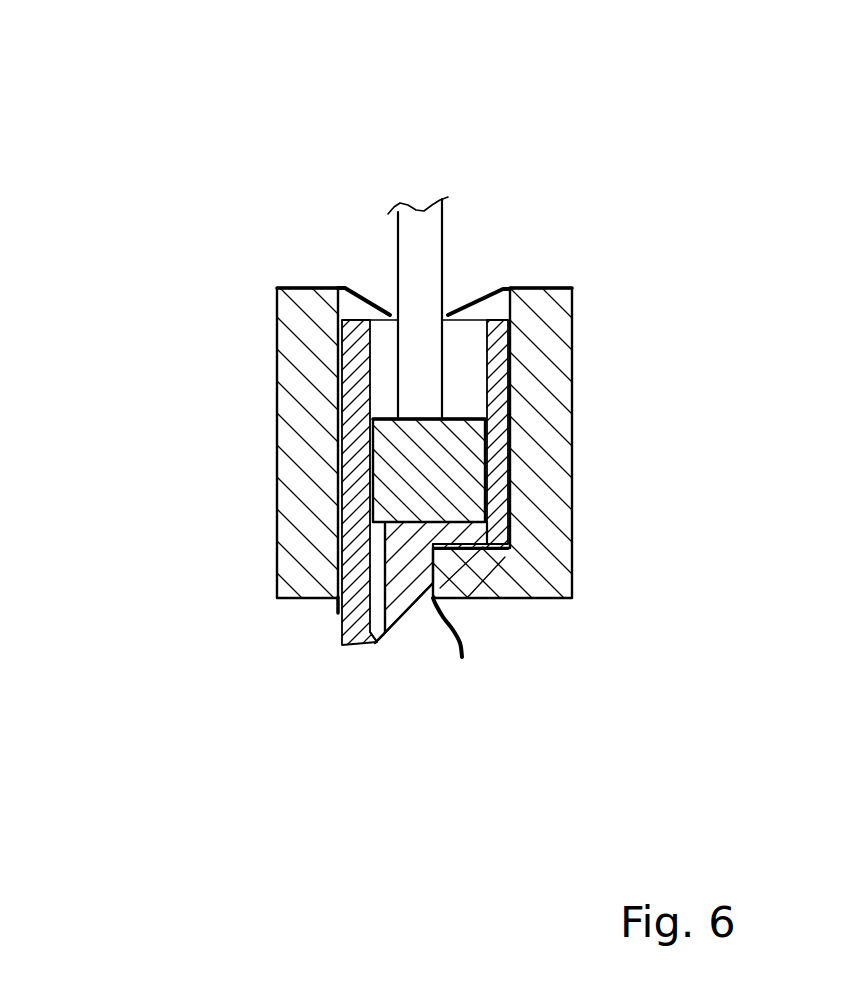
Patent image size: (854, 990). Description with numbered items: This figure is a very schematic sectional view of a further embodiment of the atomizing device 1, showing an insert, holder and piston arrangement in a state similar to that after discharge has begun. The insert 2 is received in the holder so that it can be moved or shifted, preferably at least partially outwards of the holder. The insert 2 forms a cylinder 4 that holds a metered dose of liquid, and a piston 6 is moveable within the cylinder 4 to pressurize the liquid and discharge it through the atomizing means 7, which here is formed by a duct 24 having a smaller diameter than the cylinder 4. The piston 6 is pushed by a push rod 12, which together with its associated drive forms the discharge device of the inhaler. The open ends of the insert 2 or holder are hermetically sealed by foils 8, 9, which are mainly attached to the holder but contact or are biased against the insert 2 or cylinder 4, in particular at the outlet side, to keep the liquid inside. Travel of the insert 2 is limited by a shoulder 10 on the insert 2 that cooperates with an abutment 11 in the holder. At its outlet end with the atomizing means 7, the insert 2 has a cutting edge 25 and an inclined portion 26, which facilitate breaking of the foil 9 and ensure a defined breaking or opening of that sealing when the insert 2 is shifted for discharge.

The atomizing device 1 is at (255, 233).
The insert 2 is at (498, 373).
The cylinder 4 is at (370, 385).
The piston 6 is at (390, 461).
The atomizing means 7 is at (488, 292).
The foil 8 is at (365, 300).
The foil 9 is at (333, 608).
The shoulder 10 is at (490, 547).
The abutment 11 is at (515, 597).
The push rod 12 is at (412, 220).
The duct 24 is at (381, 550).
The cutting edge 25 is at (373, 647).
The inclined portion 26 is at (403, 600).